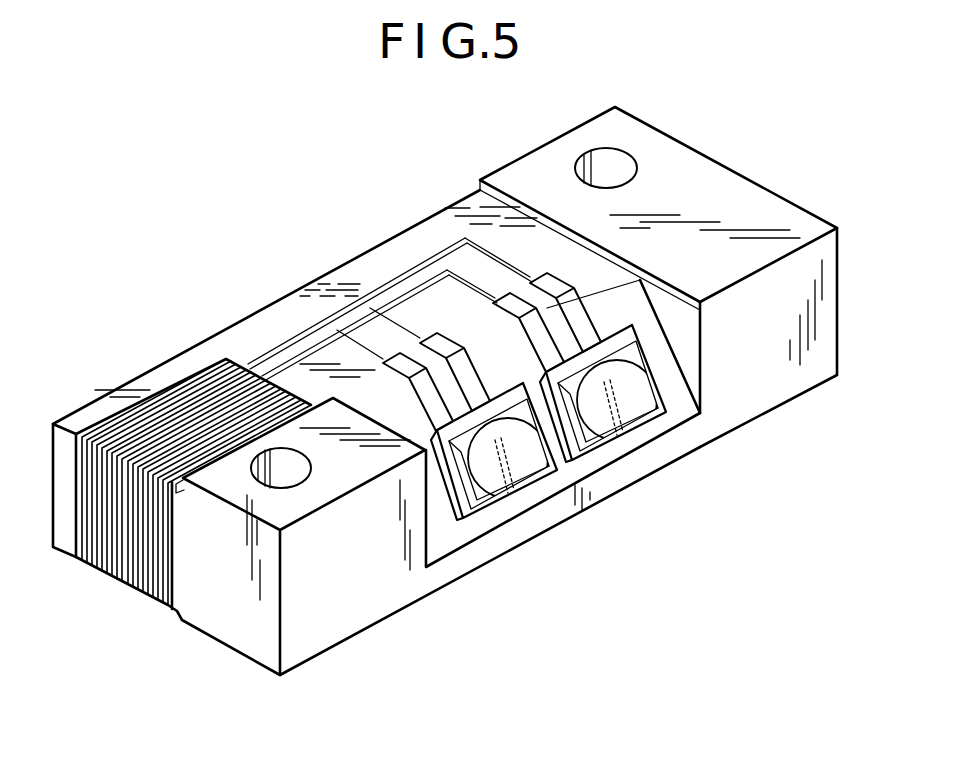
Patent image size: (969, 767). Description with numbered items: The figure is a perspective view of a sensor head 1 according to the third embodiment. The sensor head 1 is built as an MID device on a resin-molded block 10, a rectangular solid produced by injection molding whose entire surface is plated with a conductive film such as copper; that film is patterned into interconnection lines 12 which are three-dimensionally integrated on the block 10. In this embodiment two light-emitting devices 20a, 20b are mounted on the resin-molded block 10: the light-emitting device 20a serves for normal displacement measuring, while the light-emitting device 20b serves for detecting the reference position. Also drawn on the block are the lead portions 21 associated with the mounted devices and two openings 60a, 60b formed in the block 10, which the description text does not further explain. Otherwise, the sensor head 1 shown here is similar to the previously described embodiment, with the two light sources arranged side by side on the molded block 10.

The sensor head 1 is at (338, 184).
The resin-molded block 10 is at (363, 575).
The interconnection lines 12 is at (250, 362).
The light-emitting device 20a is at (527, 463).
The light-emitting device 20b is at (632, 415).
The lead terminals 21 is at (573, 288).
The mounting hole 60a is at (624, 150).
The mounting hole 60b is at (300, 466).